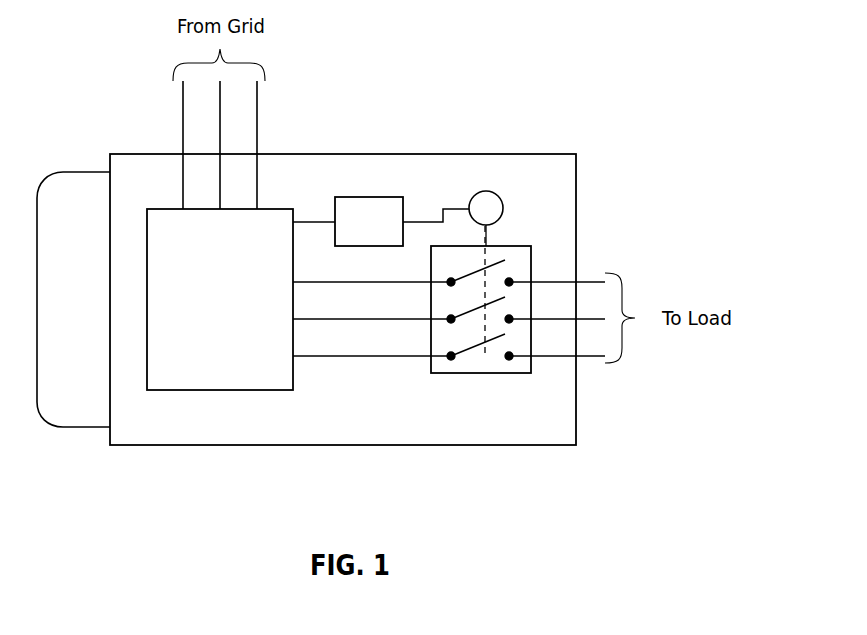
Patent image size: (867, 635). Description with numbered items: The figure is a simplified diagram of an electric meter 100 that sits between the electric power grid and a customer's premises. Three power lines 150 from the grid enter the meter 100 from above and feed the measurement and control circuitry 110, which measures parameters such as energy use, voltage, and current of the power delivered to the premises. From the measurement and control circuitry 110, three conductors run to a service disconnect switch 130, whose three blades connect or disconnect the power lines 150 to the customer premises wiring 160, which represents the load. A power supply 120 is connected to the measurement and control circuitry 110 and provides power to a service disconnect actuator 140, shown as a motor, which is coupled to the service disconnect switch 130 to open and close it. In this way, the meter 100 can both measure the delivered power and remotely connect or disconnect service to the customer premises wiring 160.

The electric meter 100 is at (360, 433).
The measurement and control circuitry 110 is at (236, 311).
The power supply 120 is at (385, 233).
The service disconnect switch 130 is at (531, 263).
The service disconnect actuator 140 is at (503, 202).
The power lines 150 is at (162, 117).
The customer premises wiring 160 is at (592, 376).